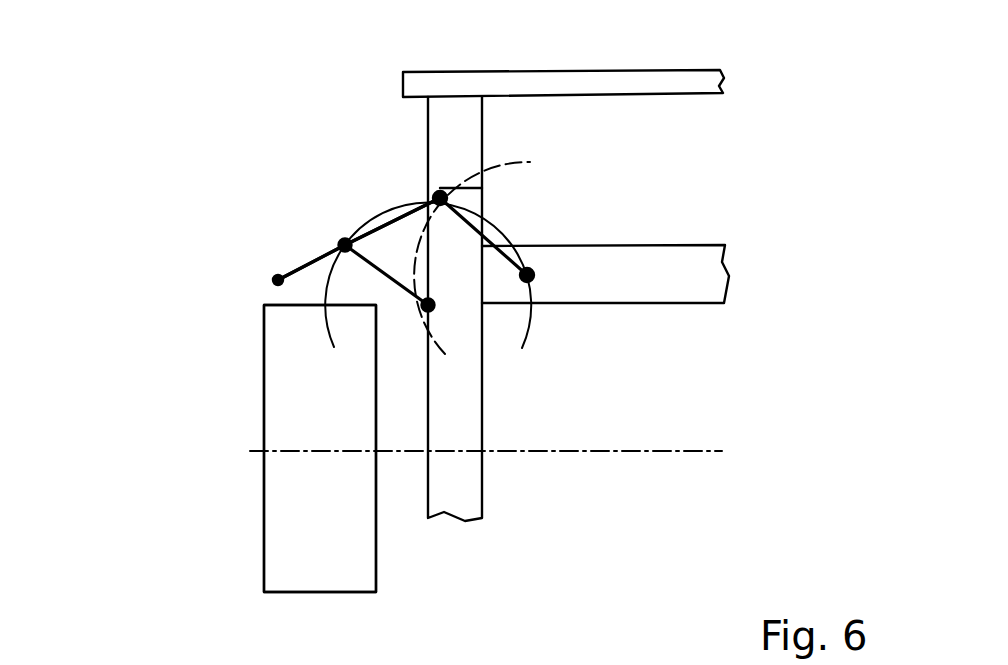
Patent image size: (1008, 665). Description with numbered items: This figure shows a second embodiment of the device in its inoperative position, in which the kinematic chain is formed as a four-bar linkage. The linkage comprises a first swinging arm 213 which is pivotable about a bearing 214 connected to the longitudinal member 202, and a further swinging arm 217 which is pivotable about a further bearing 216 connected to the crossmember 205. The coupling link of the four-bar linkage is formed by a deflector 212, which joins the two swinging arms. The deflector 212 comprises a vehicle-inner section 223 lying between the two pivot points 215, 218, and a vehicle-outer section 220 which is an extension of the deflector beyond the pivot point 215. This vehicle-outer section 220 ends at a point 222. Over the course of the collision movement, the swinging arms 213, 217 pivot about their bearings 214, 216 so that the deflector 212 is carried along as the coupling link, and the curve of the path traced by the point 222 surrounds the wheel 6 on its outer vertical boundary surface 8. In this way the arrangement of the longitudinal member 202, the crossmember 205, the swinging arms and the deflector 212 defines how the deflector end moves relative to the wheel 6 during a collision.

The wheel 6 is at (295, 420).
The outer vertical boundary surface 8 is at (264, 368).
The longitudinal member 202 is at (457, 477).
The crossmember 205 is at (668, 267).
The deflector 212 is at (392, 225).
The first swinging arm 213 is at (367, 272).
The bearing 214 is at (428, 305).
The pivot point 215 is at (345, 245).
The further bearing 216 is at (527, 275).
The further swinging arm 217 is at (481, 220).
The pivot point 218 is at (440, 198).
The vehicle-outer section 220 is at (300, 260).
The point 222 is at (278, 280).
The vehicle-inner section 223 is at (367, 228).